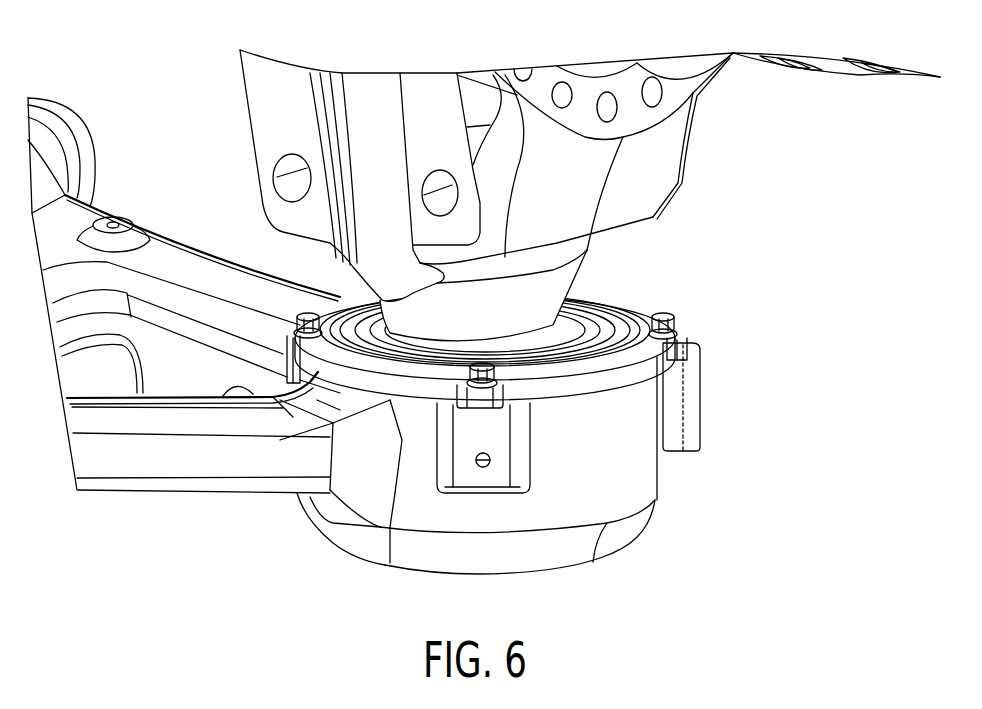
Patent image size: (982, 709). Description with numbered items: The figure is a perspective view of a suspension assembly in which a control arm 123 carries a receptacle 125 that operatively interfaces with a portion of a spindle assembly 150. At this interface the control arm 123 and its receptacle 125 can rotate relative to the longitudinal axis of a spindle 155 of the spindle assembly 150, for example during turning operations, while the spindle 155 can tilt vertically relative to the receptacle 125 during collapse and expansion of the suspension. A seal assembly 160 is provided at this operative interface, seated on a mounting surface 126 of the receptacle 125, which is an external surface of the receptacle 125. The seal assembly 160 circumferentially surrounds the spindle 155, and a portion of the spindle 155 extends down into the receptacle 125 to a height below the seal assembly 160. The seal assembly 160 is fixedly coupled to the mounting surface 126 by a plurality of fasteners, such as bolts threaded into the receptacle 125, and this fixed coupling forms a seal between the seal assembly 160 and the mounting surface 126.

The control arm 123 is at (162, 466).
The receptacle 125 is at (643, 478).
The mounting surface 126 is at (305, 372).
The spindle assembly 150 is at (706, 190).
The spindle 155 is at (540, 297).
The seal assembly 160 is at (705, 330).